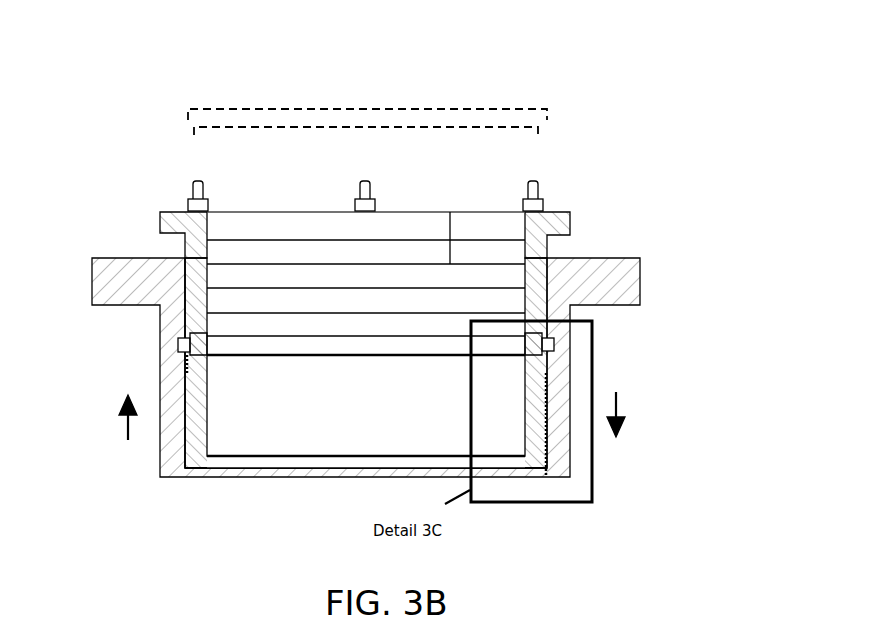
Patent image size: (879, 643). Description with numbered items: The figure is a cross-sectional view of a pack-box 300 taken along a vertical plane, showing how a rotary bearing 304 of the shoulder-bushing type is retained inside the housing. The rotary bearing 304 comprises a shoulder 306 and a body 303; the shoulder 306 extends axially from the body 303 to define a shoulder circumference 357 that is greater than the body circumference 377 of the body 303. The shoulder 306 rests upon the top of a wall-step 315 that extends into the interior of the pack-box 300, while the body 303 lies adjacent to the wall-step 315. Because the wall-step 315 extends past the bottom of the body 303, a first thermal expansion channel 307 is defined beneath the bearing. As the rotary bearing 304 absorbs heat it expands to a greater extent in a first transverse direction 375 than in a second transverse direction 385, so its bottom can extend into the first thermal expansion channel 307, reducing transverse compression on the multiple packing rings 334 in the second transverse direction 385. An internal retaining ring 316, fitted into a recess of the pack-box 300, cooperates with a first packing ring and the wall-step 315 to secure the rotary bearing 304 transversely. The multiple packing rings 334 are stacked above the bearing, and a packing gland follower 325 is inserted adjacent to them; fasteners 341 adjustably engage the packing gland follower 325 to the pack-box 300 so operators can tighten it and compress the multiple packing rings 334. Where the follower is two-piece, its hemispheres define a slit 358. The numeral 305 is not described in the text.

The pack-box 300 is at (122, 278).
The body 303 is at (200, 398).
The rotary bearing 304 is at (323, 417).
The vessel wall 305 is at (183, 278).
The shoulder 306 is at (185, 360).
The first thermal expansion channel 307 is at (248, 462).
The wall-step 315 is at (547, 387).
The internal retaining ring 316 is at (176, 345).
The packing gland follower 325 is at (553, 222).
The multiple packing rings 334 is at (529, 300).
The fasteners 341 is at (363, 192).
The shoulder circumference 357 is at (364, 98).
The slit 358 is at (451, 224).
The first transverse direction 375 is at (655, 414).
The body circumference 377 is at (538, 131).
The second transverse direction 385 is at (104, 423).